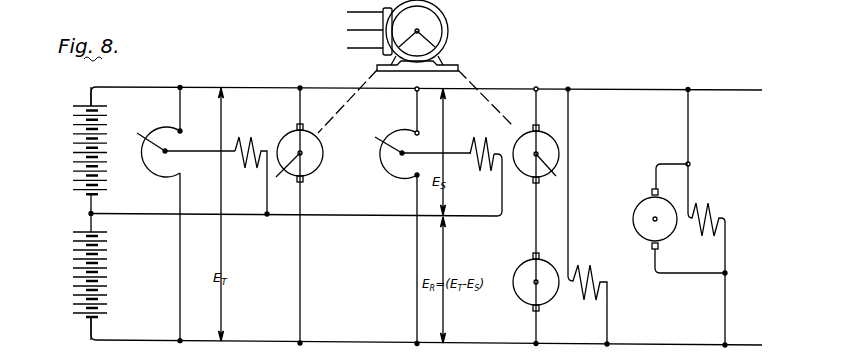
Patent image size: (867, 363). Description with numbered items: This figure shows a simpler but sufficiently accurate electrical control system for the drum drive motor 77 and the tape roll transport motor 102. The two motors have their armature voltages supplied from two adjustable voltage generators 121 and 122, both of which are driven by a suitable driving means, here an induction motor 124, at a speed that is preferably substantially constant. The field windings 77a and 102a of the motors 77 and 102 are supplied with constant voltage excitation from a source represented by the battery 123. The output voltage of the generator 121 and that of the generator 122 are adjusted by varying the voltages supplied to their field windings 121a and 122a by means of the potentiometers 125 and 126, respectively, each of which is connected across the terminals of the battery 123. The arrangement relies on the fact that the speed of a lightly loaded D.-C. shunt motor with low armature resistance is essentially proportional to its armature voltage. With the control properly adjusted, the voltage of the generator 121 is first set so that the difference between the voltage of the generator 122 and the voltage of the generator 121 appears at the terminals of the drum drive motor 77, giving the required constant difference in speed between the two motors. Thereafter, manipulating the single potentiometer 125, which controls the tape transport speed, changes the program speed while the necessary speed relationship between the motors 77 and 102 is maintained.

The induction motor 124 is at (449, 26).
The potentiometer 126 is at (158, 125).
The field winding 122a is at (245, 136).
The adjustable voltage generator 122 is at (310, 176).
The potentiometer 125 is at (400, 130).
The field winding 121a is at (474, 138).
The adjustable voltage generator 121 is at (559, 145).
The battery 123 is at (72, 149).
The tape roll transport motor 102 is at (640, 202).
The field winding 102a is at (707, 208).
The drum drive motor 77 is at (521, 265).
The field winding 77a is at (585, 298).